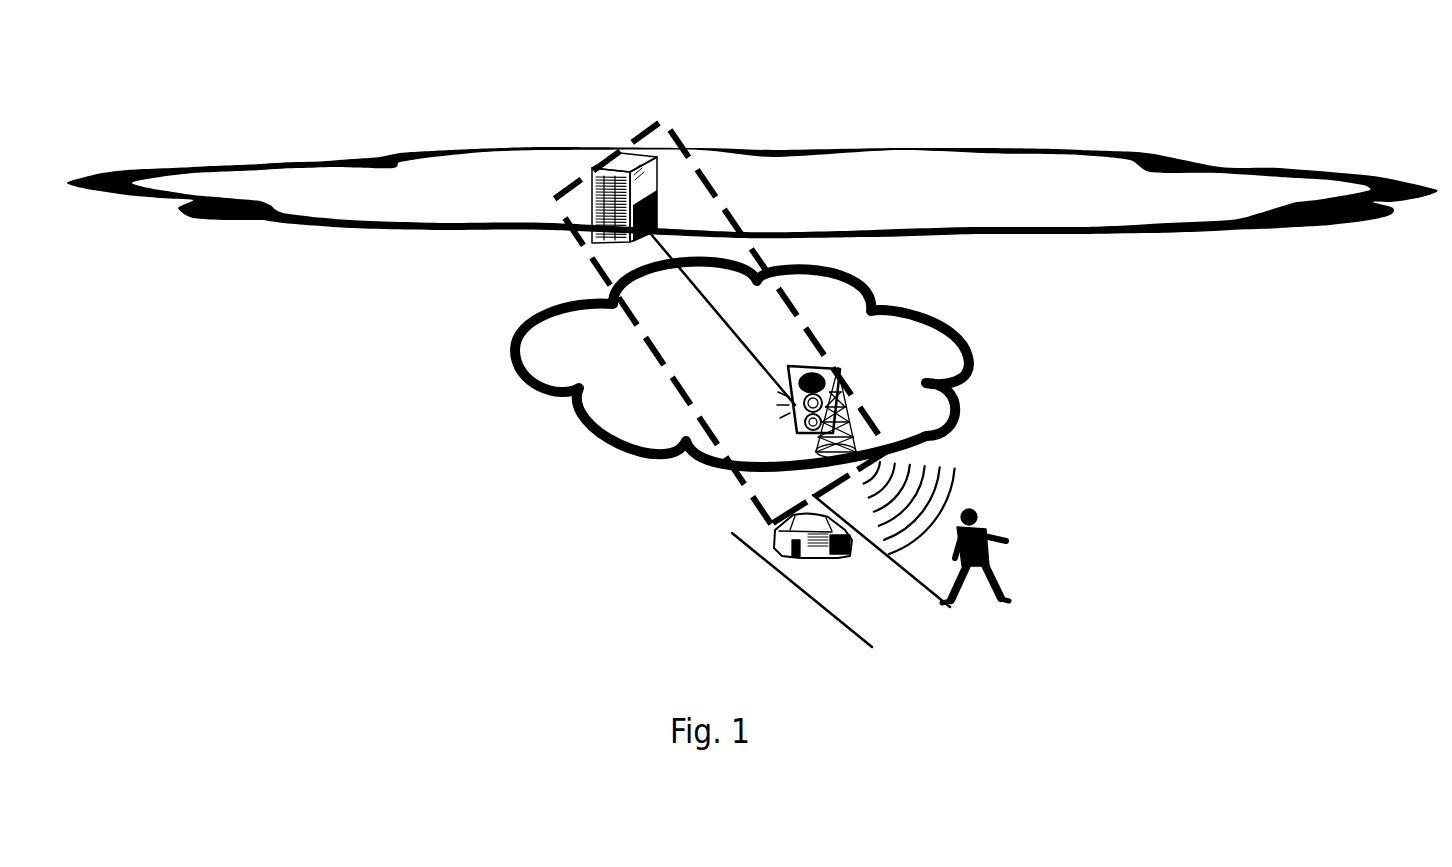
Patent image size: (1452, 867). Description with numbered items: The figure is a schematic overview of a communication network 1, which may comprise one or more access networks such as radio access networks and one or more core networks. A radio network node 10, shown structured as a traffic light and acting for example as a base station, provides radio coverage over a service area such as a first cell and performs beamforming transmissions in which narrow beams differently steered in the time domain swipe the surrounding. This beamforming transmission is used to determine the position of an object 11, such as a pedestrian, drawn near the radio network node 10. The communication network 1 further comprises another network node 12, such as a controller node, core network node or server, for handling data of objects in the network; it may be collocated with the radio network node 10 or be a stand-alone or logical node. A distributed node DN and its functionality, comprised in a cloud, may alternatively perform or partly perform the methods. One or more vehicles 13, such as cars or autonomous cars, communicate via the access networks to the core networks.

The communication network 1 is at (245, 83).
The radio network node 10 is at (840, 374).
The object 11 is at (995, 537).
The other network node 12 is at (617, 150).
The vehicle 13 is at (772, 540).
The distributed node DN is at (690, 173).